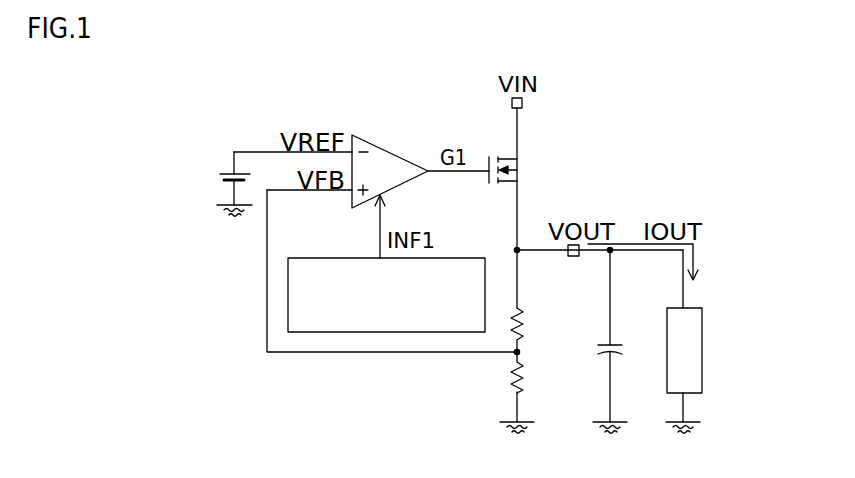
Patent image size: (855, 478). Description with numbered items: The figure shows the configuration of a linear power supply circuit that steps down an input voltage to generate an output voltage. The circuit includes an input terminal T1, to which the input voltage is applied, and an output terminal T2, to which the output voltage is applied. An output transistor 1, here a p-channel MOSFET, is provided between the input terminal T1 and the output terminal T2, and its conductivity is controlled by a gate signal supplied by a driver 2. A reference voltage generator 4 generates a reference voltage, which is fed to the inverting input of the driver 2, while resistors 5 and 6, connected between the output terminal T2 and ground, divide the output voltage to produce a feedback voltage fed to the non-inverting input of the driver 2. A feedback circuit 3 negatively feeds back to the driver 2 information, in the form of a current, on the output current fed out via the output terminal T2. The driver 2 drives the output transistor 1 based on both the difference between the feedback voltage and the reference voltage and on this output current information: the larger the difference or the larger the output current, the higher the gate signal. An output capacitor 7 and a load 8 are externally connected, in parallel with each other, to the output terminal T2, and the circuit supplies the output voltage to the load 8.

The output transistor 1 is at (521, 172).
The driver 2 is at (393, 151).
The feedback circuit 3 is at (476, 258).
The reference voltage generator 4 is at (215, 175).
The resistor 5 is at (527, 325).
The resistor 6 is at (527, 378).
The output capacitor 7 is at (623, 350).
The load 8 is at (702, 350).
The input terminal T1 is at (524, 103).
The output terminal T2 is at (574, 256).